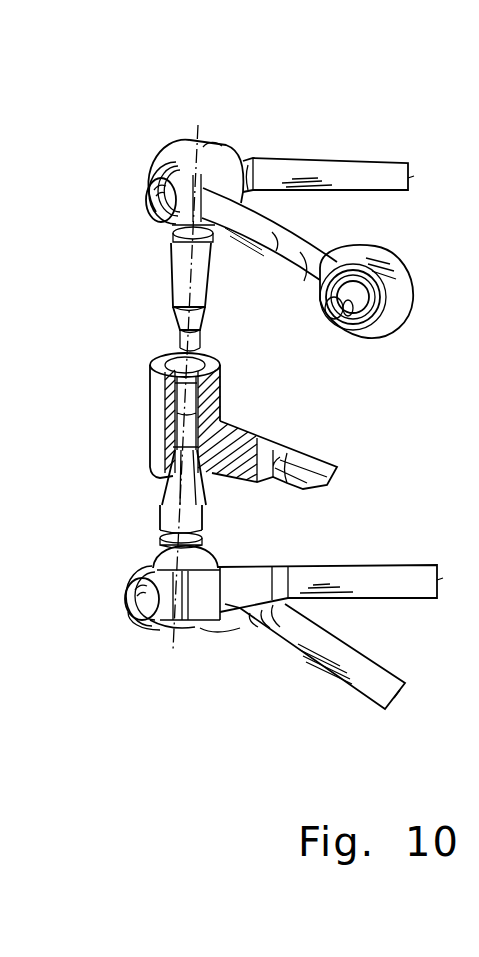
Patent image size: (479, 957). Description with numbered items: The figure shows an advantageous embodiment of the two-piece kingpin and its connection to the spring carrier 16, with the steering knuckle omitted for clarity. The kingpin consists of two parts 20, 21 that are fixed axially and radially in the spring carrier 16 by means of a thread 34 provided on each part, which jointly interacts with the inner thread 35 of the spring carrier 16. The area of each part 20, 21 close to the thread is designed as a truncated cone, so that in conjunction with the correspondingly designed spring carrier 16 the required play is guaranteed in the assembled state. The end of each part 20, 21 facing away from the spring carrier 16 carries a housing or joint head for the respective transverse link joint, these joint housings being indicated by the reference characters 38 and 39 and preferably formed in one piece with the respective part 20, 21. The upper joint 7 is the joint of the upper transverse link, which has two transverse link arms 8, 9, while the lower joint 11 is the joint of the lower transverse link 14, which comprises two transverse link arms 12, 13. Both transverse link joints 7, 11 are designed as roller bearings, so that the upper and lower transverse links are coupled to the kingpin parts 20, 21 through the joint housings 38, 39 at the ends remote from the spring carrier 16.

The joint of the upper transverse link 7 is at (140, 210).
The transverse link arm 8 is at (348, 167).
The transverse link arm 9 is at (272, 235).
The joint housing 38 is at (212, 146).
The part of the kingpin 20 is at (183, 278).
The thread 34 is at (182, 347).
The spring carrier 16 is at (157, 413).
The inner thread 35 is at (168, 505).
The part of the kingpin 21 is at (165, 548).
The joint of the lower transverse link 11 is at (129, 622).
The joint housing 39 is at (168, 623).
The lower transverse link 14 is at (232, 628).
The transverse link arm 12 is at (358, 580).
The transverse link arm 13 is at (292, 627).